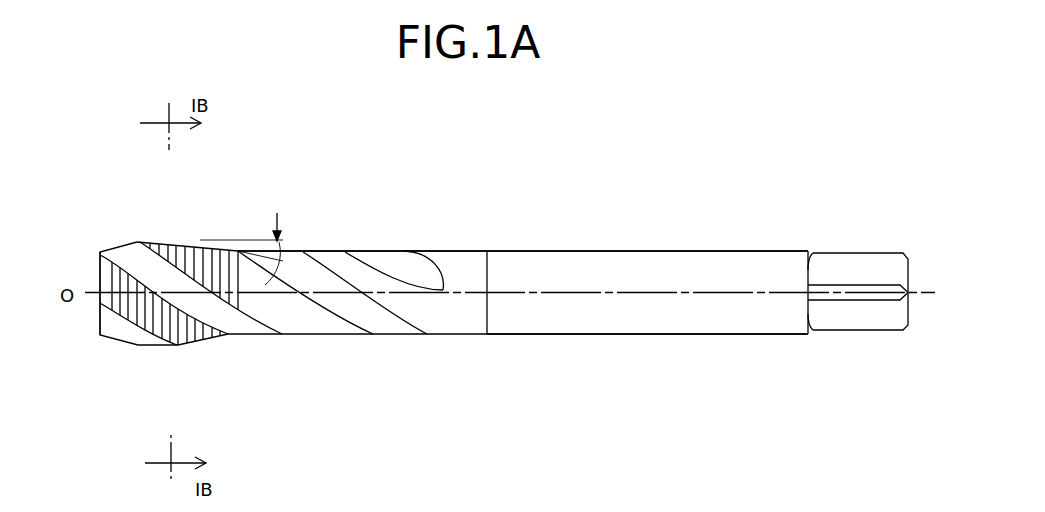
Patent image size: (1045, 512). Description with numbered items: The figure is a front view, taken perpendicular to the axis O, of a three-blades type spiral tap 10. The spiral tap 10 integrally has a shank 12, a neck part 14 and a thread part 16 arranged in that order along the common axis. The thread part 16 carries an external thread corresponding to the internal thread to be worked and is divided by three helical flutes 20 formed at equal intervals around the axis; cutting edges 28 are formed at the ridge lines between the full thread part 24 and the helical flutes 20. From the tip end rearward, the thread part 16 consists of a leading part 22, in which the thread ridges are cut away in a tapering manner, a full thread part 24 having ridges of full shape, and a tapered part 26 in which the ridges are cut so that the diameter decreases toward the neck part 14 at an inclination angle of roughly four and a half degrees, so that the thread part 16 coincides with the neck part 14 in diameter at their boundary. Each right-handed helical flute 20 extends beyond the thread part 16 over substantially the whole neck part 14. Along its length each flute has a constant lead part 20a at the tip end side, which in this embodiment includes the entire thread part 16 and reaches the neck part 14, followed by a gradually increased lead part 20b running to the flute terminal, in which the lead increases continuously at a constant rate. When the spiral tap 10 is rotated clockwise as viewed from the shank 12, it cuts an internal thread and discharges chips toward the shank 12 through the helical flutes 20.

The spiral tap 10 is at (740, 180).
The shank 12 is at (681, 318).
The neck part 14 is at (458, 265).
The thread part 16 is at (118, 351).
The helical flutes 20 is at (232, 318).
The constant lead part 20a is at (260, 340).
The gradually increased lead part 20b is at (445, 340).
The leading part 22 is at (97, 224).
The full thread part 24 is at (140, 224).
The tapered part 26 is at (235, 224).
The cutting edges 28 is at (119, 258).